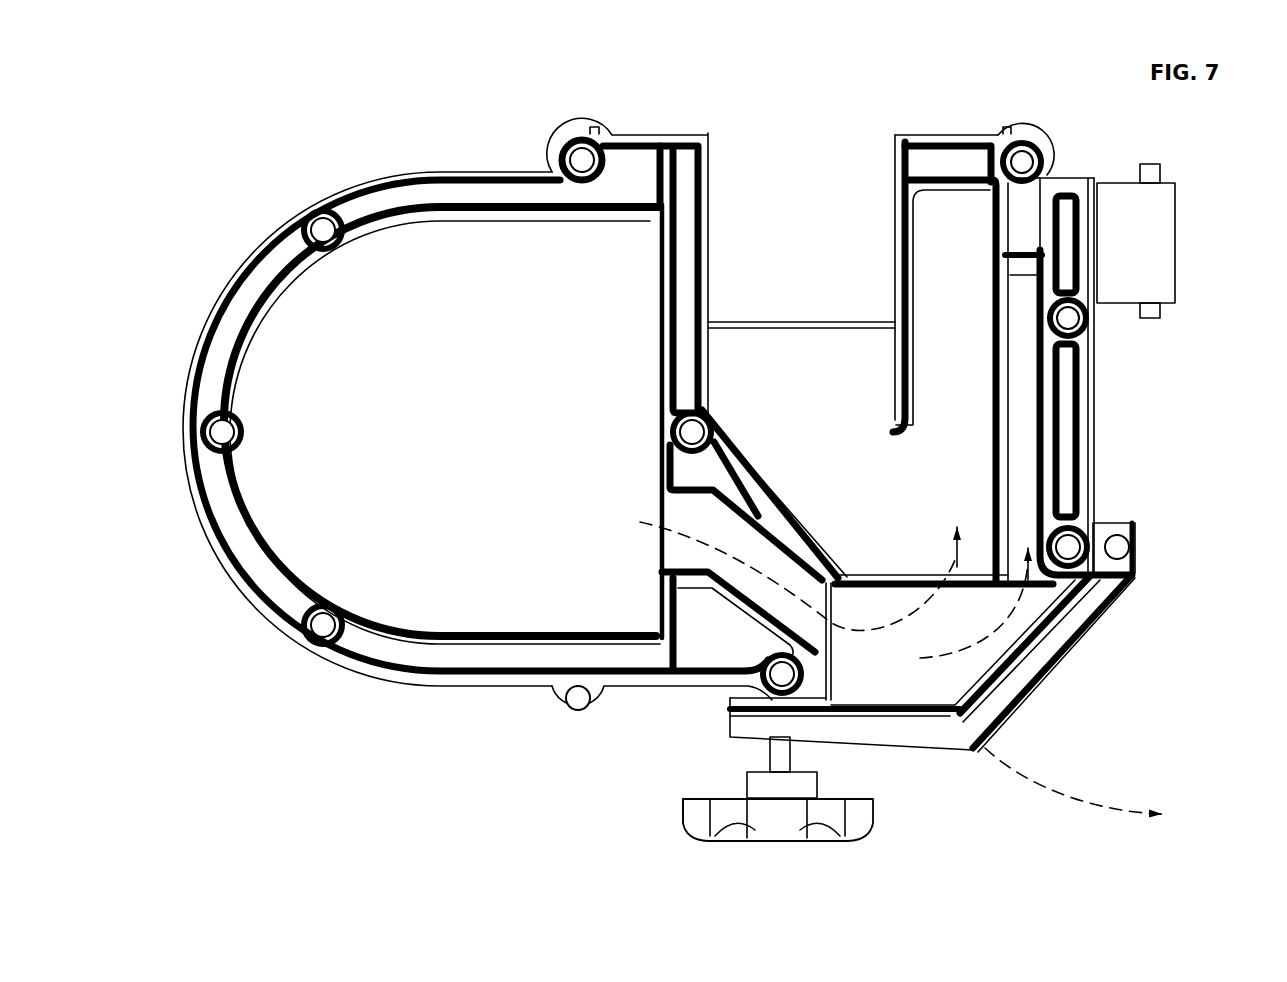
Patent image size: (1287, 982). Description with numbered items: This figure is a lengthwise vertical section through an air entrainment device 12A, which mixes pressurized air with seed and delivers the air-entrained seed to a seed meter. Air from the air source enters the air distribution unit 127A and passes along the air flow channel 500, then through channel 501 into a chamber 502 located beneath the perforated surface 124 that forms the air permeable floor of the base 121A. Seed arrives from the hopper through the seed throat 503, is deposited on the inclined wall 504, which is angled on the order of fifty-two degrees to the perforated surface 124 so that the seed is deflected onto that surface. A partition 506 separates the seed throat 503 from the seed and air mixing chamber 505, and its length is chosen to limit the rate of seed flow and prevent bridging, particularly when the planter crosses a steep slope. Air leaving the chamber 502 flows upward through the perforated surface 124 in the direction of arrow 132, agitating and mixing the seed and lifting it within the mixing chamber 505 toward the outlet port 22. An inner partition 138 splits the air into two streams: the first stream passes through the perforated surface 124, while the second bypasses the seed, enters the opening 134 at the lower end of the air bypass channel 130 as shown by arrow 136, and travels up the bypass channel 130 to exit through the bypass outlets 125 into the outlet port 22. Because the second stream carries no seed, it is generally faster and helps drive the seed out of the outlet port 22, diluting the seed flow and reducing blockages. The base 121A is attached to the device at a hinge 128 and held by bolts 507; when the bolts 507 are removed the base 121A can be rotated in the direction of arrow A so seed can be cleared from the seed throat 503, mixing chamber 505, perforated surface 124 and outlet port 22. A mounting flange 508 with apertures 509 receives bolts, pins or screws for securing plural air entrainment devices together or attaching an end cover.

The air entrainment device 12A is at (452, 163).
The air distribution unit 127A is at (237, 275).
The air flow channel 500 is at (470, 432).
The mounting flange 508 is at (643, 127).
The apertures 509 is at (566, 140).
The inclined wall 504 is at (730, 437).
The seed throat 503 is at (790, 355).
The partition 506 is at (912, 375).
The seed and air mixing chamber 505 is at (950, 268).
The inner partition 138 is at (993, 447).
The bypass outlets 125 is at (1025, 282).
The air bypass channel 130 is at (1030, 347).
The outlet port 22 is at (1177, 185).
The perforated surface 124 is at (893, 575).
The hinge 128 is at (1136, 578).
The opening 134 is at (1043, 590).
The base 121A is at (1047, 677).
The arrow 136 is at (977, 652).
The arrow 132 is at (797, 605).
The channel 501 is at (698, 545).
The chamber 502 is at (898, 666).
The bolts 507 is at (795, 760).
The arrow A is at (1086, 787).